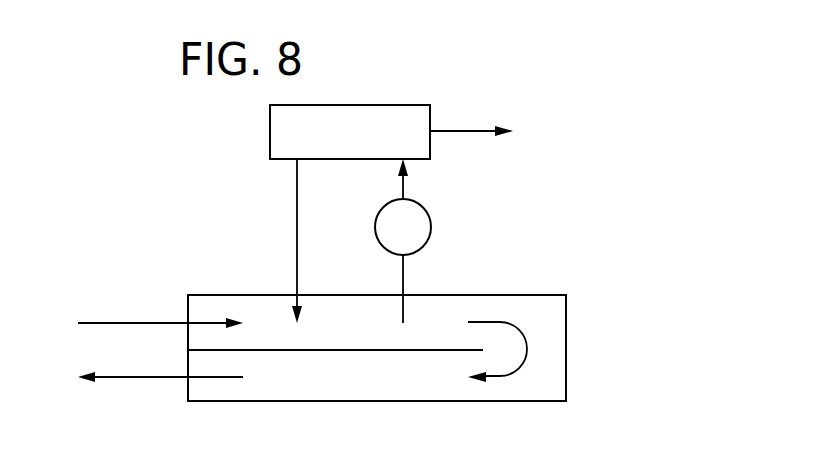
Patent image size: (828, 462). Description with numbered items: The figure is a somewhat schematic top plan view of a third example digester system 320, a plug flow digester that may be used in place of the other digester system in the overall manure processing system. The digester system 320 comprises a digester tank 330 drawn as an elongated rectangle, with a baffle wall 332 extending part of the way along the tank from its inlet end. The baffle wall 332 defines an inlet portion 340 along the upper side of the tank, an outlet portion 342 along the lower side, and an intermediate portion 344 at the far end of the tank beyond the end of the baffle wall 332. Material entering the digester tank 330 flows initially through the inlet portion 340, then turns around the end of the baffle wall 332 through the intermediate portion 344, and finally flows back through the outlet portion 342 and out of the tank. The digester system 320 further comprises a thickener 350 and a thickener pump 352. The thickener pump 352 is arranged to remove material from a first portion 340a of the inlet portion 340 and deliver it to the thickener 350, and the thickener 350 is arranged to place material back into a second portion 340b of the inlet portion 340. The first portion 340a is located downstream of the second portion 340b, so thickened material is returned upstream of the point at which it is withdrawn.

The third example digester system 320 is at (196, 181).
The digester tank 330 is at (336, 387).
The baffle wall 332 is at (382, 350).
The inlet portion 340 is at (193, 308).
The first portion of the inlet portion 340a is at (412, 323).
The second portion of the inlet portion 340b is at (305, 325).
The outlet portion 342 is at (193, 387).
The intermediate portion 344 is at (547, 342).
The thickener 350 is at (277, 133).
The thickener pump 352 is at (420, 222).